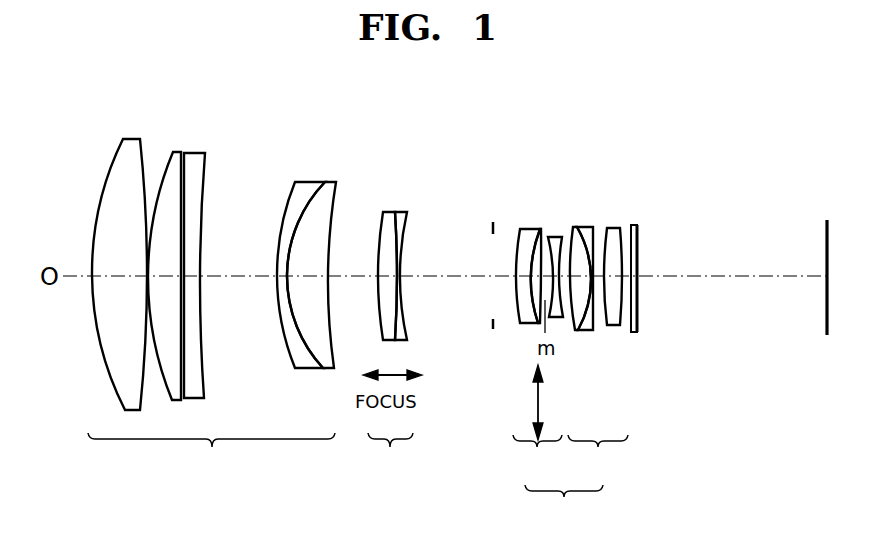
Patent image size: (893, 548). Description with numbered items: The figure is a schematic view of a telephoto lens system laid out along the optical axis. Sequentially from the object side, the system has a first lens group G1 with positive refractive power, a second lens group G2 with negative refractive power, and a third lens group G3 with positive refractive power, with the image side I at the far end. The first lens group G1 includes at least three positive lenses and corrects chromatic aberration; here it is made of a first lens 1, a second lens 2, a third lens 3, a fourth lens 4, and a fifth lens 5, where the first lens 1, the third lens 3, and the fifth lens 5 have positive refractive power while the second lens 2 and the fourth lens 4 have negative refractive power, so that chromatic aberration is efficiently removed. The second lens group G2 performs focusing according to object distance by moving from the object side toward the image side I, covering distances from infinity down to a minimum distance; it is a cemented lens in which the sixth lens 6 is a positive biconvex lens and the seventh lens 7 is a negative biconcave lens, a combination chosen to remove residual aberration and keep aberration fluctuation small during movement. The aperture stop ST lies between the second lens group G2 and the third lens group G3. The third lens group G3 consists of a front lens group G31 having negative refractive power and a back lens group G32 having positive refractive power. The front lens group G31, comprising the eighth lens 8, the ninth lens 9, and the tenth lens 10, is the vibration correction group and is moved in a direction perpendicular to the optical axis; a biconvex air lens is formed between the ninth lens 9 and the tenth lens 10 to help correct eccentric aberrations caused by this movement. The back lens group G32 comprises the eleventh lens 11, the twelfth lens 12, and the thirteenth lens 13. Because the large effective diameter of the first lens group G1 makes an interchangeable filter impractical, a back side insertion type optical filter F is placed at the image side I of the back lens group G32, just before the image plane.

The first lens 1 is at (133, 139).
The second lens 2 is at (175, 151).
The third lens 3 is at (202, 152).
The fourth lens 4 is at (302, 181).
The fifth lens 5 is at (333, 181).
The sixth lens 6 is at (385, 211).
The seventh lens 7 is at (406, 211).
The eighth lens 8 is at (518, 228).
The ninth lens 9 is at (536, 228).
The tenth lens 10 is at (554, 236).
The eleventh lens 11 is at (575, 226).
The twelfth lens 12 is at (593, 226).
The thirteenth lens 13 is at (617, 227).
The optical filter F is at (640, 224).
The aperture stop ST is at (491, 227).
The image side I is at (827, 262).
The first lens group G1 is at (211, 455).
The second lens group G2 is at (390, 455).
The third lens group G3 is at (564, 507).
The front lens group G31 is at (537, 456).
The back lens group G32 is at (598, 456).